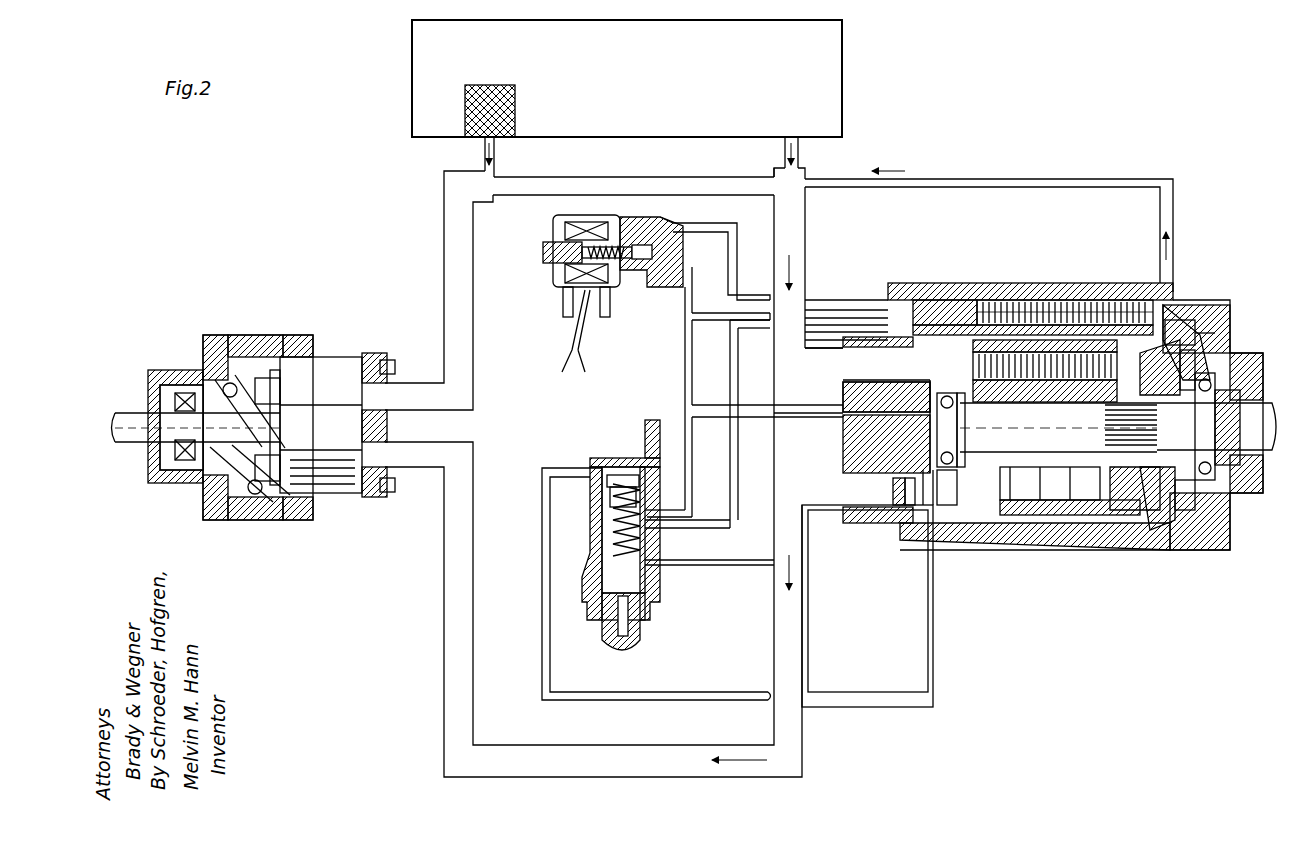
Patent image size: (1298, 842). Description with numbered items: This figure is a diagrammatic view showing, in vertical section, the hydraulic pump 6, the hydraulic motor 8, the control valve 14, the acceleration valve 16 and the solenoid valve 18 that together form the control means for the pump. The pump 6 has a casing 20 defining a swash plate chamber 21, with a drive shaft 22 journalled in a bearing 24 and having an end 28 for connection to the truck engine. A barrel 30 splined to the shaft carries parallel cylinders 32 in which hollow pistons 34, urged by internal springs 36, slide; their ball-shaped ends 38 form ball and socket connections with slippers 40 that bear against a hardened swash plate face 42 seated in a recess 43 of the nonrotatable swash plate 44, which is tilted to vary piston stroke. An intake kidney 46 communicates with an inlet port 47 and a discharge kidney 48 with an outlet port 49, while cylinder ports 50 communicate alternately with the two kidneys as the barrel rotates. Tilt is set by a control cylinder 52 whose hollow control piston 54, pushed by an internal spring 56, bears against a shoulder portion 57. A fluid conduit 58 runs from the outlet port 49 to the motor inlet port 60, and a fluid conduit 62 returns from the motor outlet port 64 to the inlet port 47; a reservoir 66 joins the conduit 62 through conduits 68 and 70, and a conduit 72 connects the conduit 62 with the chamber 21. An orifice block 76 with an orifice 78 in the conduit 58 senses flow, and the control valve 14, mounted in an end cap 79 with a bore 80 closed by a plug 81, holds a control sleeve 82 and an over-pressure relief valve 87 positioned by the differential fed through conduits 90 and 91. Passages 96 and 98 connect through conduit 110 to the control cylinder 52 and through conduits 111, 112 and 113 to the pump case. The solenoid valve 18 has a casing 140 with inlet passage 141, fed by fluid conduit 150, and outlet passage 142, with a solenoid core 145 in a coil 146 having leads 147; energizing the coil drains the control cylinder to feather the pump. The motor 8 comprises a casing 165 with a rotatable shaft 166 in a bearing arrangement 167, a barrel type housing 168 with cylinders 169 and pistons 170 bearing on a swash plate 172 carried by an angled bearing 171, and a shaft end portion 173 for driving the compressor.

The hydraulic pump 6 is at (1033, 403).
The hydraulic motor 8 is at (253, 425).
The control valve 14 is at (661, 535).
The acceleration valve 16 is at (885, 268).
The solenoid valve 18 is at (610, 283).
The casing 20 is at (1222, 550).
The swash plate chamber 21 is at (1175, 318).
The drive shaft 22 is at (1015, 440).
The bearing 24 is at (852, 430).
The end of drive shaft 28 is at (1268, 403).
The barrel 30 is at (1045, 500).
The cylinders 32 is at (1068, 500).
The hollow pistons 34 is at (1095, 500).
The internal springs 36 is at (988, 425).
The ball-shaped piston ends 38 is at (1142, 358).
The slippers 40 is at (1195, 340).
The swash plate face 42 is at (1177, 503).
The recess 43 is at (1195, 360).
The swash plate 44 is at (1150, 497).
The intake kidney 46 is at (935, 375).
The inlet port 47 is at (886, 395).
The discharge kidney 48 is at (950, 507).
The outlet port 49 is at (926, 507).
The cylinder ports 50 is at (995, 553).
The control cylinder 52 is at (1000, 298).
The control piston 54 is at (1085, 300).
The internal spring 56 is at (1038, 300).
The shoulder portion 57 is at (1200, 333).
The fluid conduit 58 is at (444, 555).
The inlet port 60 is at (372, 470).
The fluid conduit 62 is at (586, 190).
The outlet port 64 is at (393, 366).
The hydraulic fluid reservoir 66 is at (665, 127).
The conduit 68 is at (496, 154).
The conduit 70 is at (800, 152).
The conduit 72 is at (1020, 182).
The orifice block 76 is at (907, 507).
The orifice 78 is at (895, 507).
The end cap 79 is at (610, 457).
The cylindrical bore 80 is at (648, 480).
The plug 81 is at (592, 615).
The control sleeve 82 is at (596, 503).
The over-pressure relief valve 87 is at (600, 521).
The conduit 90 is at (714, 692).
The conduit 91 is at (738, 566).
The passage 96 is at (652, 512).
The passage 98 is at (655, 532).
The conduit 110 is at (739, 444).
The conduit 111 is at (712, 321).
The conduit 112 is at (684, 378).
The conduit 113 is at (757, 405).
The casing 140 is at (662, 280).
The inlet passage 141 is at (665, 215).
The outlet passage 142 is at (678, 250).
The solenoid core 145 is at (588, 246).
The coil 146 is at (560, 277).
The leads 147 is at (573, 352).
The fluid conduit 150 is at (828, 298).
The casing 165 is at (350, 490).
The rotatable shaft 166 is at (188, 485).
The bearing arrangement 167 is at (184, 462).
The barrel type housing 168 is at (325, 362).
The cylinders 169 is at (262, 358).
The piston 170 is at (258, 372).
The bearing 171 is at (255, 498).
The swash plate 172 is at (270, 518).
The end portion 173 is at (130, 444).